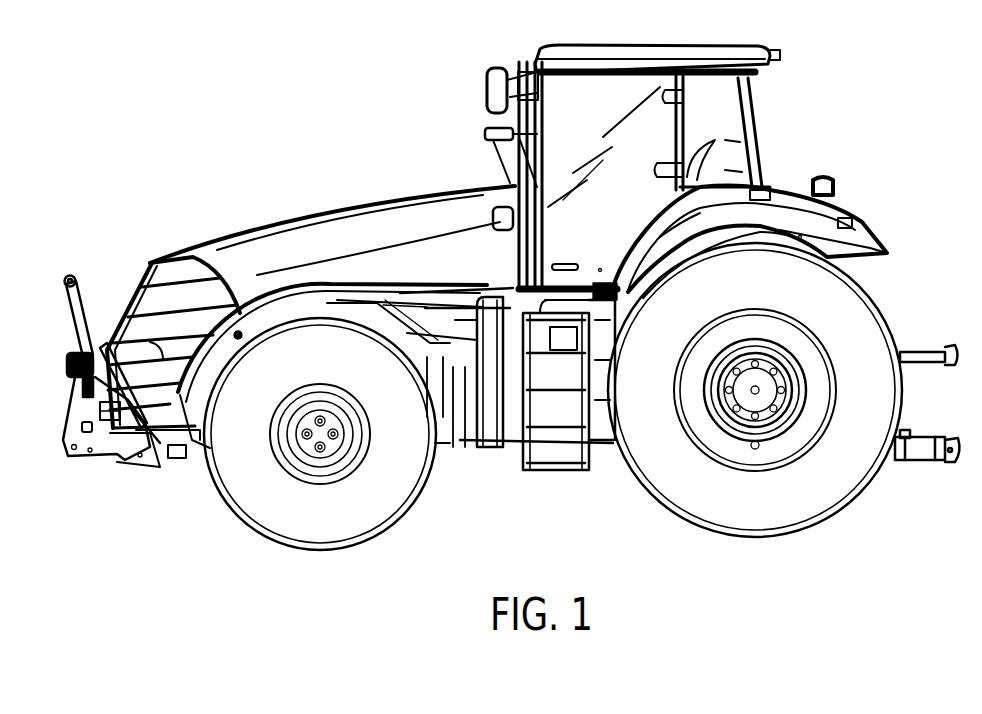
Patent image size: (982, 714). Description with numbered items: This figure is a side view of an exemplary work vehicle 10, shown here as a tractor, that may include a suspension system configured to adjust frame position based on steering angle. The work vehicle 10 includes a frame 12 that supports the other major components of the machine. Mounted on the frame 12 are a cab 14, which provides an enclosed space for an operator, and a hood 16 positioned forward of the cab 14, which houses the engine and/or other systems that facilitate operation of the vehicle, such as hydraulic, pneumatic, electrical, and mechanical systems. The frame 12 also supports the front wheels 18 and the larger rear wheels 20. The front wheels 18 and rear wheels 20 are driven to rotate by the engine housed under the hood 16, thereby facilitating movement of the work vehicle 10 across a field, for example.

The work vehicle 10 is at (228, 73).
The frame 12 is at (165, 430).
The cab 14 is at (707, 50).
The hood 16 is at (312, 212).
The front wheels 18 is at (257, 510).
The rear wheels 20 is at (700, 513).